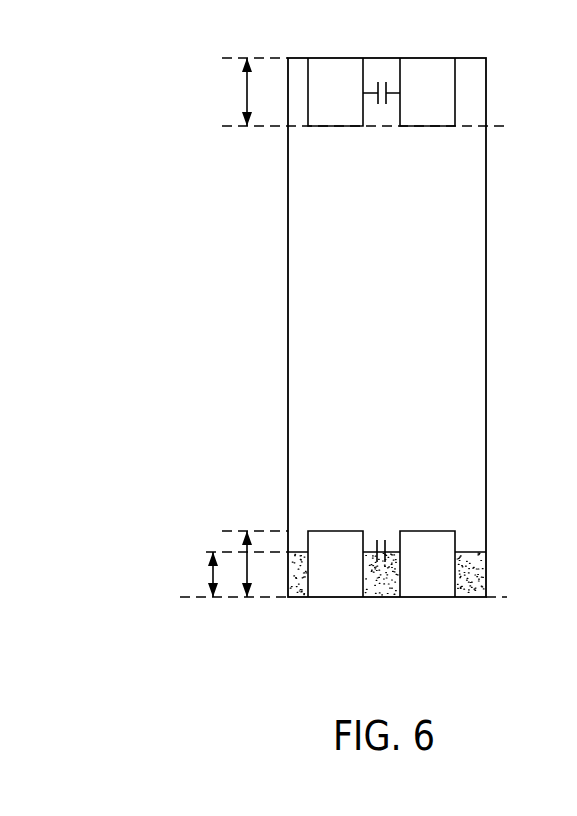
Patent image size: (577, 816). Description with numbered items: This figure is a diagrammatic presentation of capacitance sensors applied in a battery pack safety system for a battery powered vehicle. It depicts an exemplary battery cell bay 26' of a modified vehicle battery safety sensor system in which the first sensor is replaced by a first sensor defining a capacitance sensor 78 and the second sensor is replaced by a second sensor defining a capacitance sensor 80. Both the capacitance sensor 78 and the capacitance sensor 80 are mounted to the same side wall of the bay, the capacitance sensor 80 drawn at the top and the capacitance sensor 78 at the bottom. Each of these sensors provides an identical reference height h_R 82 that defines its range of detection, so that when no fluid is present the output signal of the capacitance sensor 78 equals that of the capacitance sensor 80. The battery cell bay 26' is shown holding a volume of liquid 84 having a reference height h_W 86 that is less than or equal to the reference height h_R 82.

The battery cell bay 26' is at (420, 327).
The capacitance sensor 78 is at (355, 531).
The capacitance sensor 80 is at (345, 58).
The reference height h_R 82 is at (248, 88).
The volume of liquid 84 is at (473, 563).
The reference height h_W 86 is at (212, 576).